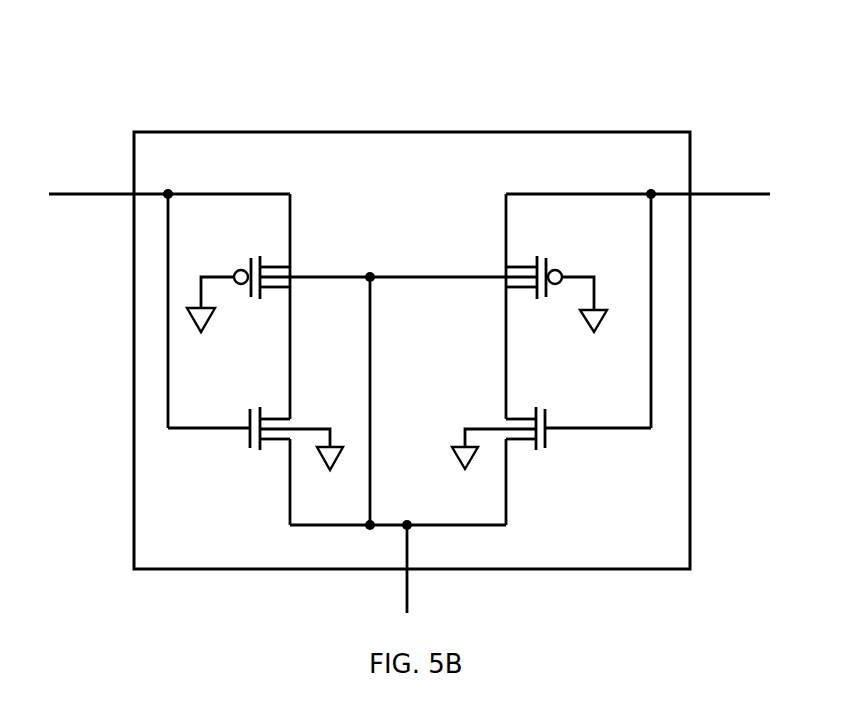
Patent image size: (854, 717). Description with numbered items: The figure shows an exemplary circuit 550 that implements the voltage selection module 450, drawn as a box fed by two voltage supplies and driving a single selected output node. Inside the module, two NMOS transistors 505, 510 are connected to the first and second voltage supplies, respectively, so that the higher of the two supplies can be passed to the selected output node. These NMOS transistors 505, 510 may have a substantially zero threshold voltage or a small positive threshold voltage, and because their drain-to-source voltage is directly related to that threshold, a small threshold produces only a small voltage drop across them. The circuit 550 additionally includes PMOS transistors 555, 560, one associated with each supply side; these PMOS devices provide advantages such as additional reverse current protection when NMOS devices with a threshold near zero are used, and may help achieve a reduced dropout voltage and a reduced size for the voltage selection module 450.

The circuit 550 is at (90, 74).
The voltage selection module 450 is at (196, 159).
The PMOS transistor 555 is at (250, 268).
The PMOS transistor 560 is at (554, 268).
The NMOS transistor 505 is at (250, 424).
The NMOS transistor 510 is at (553, 418).